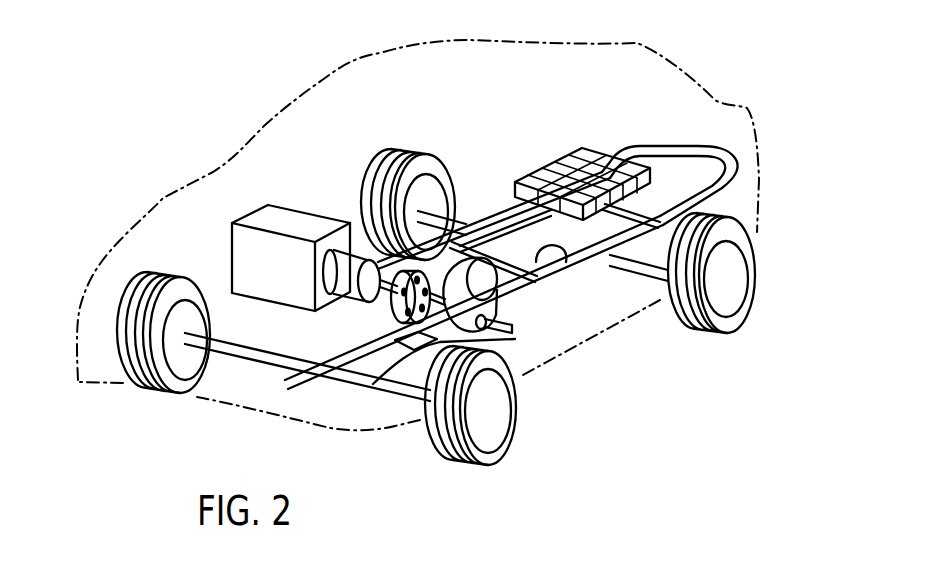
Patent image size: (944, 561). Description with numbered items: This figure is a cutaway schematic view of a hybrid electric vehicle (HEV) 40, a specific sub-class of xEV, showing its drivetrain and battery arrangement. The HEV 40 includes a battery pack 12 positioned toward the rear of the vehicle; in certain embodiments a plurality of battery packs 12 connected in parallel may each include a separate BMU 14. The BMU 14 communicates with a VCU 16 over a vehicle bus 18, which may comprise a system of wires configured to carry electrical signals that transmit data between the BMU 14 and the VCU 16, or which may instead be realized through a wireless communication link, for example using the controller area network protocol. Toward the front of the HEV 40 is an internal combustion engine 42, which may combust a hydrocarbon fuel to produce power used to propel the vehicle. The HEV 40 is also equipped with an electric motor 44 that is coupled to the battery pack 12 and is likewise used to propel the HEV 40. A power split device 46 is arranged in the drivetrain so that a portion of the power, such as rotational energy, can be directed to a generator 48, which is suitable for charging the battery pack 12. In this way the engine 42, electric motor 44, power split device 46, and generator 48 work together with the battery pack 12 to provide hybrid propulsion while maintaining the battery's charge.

The battery pack 12 is at (607, 108).
The BMU 14 is at (622, 160).
The VCU 16 is at (377, 380).
The vehicle bus 18 is at (692, 156).
The hybrid electric vehicle (HEV) 40 is at (639, 40).
The internal combustion engine 42 is at (263, 218).
The electric motor 44 is at (353, 262).
The power split device 46 is at (443, 300).
The generator 48 is at (513, 328).